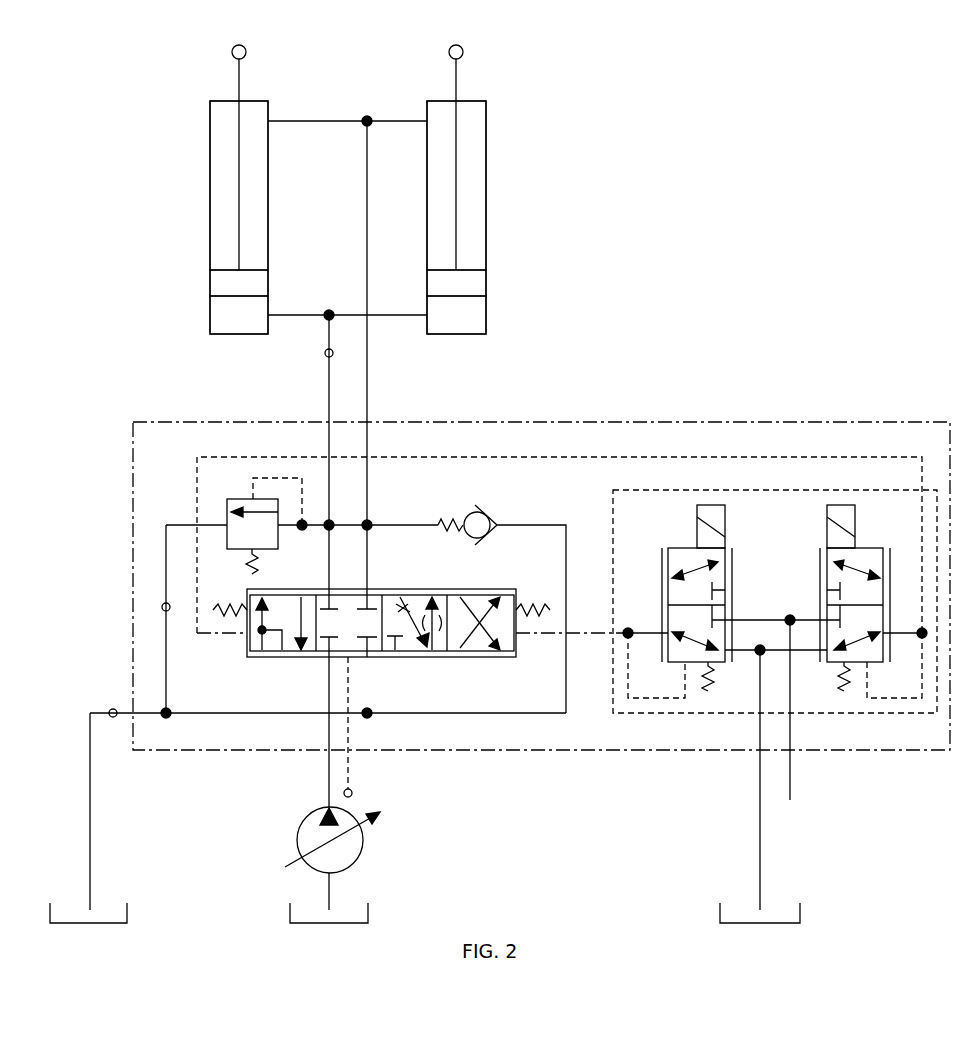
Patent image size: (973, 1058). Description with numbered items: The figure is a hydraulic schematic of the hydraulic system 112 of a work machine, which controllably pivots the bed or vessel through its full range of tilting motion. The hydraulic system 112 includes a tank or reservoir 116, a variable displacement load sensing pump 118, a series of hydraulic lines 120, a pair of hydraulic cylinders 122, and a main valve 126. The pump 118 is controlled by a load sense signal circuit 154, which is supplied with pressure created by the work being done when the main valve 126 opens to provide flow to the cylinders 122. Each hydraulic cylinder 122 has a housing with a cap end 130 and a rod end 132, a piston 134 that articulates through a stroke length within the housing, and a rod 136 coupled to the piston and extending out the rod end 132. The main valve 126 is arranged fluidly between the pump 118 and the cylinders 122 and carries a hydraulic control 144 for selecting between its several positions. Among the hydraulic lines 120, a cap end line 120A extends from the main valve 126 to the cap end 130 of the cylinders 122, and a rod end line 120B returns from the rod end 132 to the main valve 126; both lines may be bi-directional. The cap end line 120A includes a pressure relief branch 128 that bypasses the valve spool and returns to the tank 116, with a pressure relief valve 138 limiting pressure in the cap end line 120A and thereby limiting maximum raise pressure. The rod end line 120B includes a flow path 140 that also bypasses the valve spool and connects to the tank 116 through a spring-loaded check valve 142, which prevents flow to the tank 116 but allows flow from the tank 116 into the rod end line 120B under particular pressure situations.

The hydraulic system 112 is at (877, 150).
The tank 116 is at (128, 905).
The variable displacement load sensing pump 118 is at (297, 838).
The hydraulic lines 120 is at (325, 353).
The cap end line 120A is at (329, 380).
The rod end line 120B is at (370, 380).
The hydraulic cylinders 122 is at (268, 218).
The main valve 126 is at (587, 422).
The pressure relief branch 128 is at (166, 553).
The cap end 130 is at (210, 313).
The rod end 132 is at (224, 101).
The piston 134 is at (210, 283).
The rod 136 is at (243, 88).
The pressure relief valve 138 is at (238, 499).
The flow path 140 is at (450, 713).
The spring-loaded check valve 142 is at (487, 514).
The hydraulic control 144 is at (778, 490).
The load sense signal circuit 154 is at (353, 793).